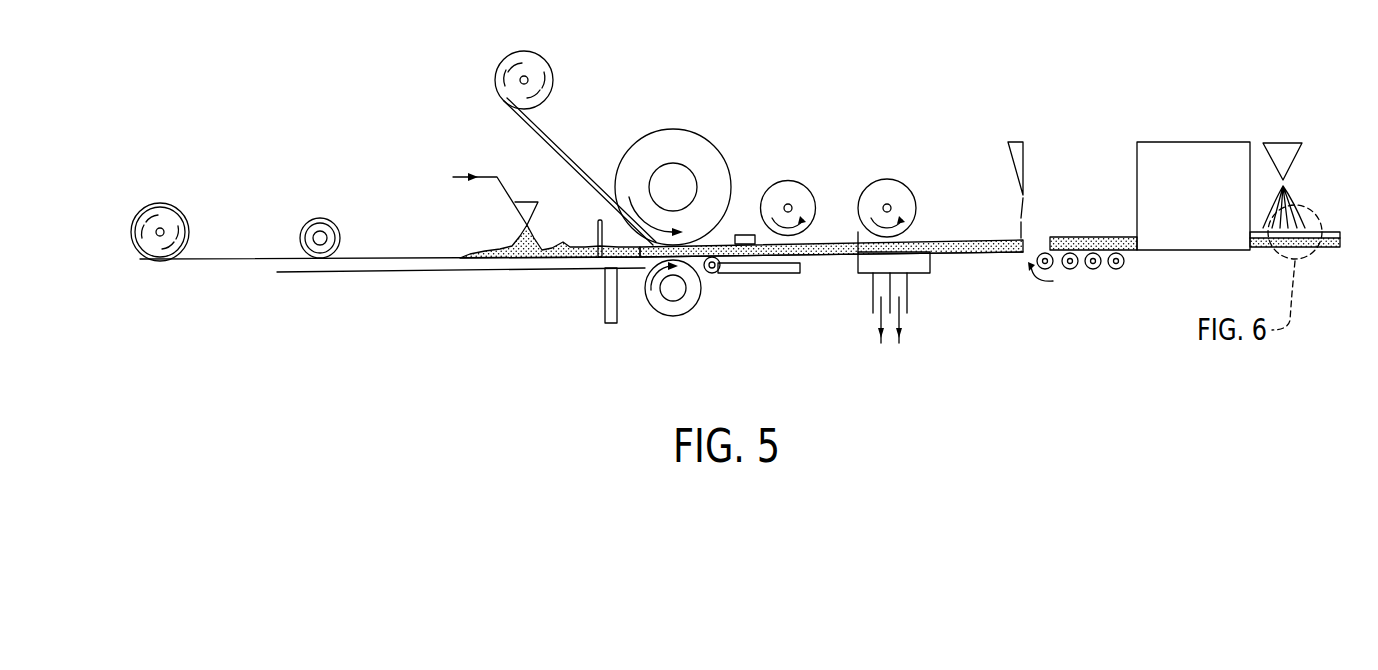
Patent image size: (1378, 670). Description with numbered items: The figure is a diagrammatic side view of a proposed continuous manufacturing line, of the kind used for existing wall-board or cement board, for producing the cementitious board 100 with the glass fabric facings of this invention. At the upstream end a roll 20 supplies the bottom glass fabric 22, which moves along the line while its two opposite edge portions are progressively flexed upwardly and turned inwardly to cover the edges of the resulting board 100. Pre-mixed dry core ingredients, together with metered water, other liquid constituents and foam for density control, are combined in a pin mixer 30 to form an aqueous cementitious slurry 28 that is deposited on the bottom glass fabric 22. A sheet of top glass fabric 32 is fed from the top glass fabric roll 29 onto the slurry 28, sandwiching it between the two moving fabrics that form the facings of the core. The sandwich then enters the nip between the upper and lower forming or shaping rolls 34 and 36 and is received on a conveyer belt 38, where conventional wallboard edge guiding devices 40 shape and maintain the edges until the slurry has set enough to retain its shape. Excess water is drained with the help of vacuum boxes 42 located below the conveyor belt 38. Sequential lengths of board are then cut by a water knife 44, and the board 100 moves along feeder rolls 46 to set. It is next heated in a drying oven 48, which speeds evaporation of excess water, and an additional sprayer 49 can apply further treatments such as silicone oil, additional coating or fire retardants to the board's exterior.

The unwind roll of web material 20 is at (165, 203).
The bottom glass fabric 22 is at (193, 263).
The aqueous cementitious slurry 28 is at (490, 246).
The top glass fabric roll 29 is at (554, 68).
The pin mixer 30 is at (483, 176).
The top glass fabric 32 is at (543, 131).
The upper forming roll 34 is at (680, 142).
The lower forming roll 36 is at (683, 316).
The conveyer belt 38 is at (742, 275).
The wallboard edge guiding devices 40 is at (747, 235).
The vacuum boxes 42 is at (912, 262).
The water knife 44 is at (1016, 150).
The feeder rolls 46 is at (1082, 272).
The drying oven 48 is at (1205, 205).
The sprayer 49 is at (1282, 160).
The cementitious board 100 is at (1077, 236).